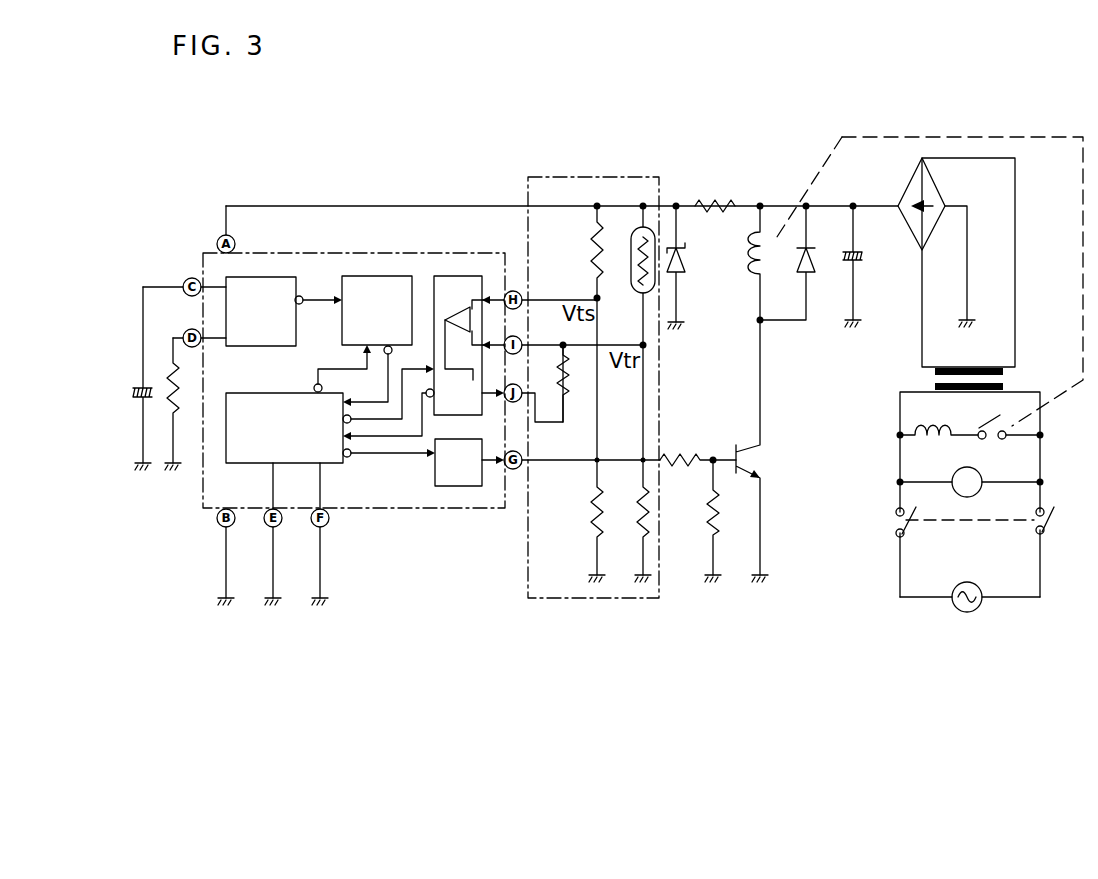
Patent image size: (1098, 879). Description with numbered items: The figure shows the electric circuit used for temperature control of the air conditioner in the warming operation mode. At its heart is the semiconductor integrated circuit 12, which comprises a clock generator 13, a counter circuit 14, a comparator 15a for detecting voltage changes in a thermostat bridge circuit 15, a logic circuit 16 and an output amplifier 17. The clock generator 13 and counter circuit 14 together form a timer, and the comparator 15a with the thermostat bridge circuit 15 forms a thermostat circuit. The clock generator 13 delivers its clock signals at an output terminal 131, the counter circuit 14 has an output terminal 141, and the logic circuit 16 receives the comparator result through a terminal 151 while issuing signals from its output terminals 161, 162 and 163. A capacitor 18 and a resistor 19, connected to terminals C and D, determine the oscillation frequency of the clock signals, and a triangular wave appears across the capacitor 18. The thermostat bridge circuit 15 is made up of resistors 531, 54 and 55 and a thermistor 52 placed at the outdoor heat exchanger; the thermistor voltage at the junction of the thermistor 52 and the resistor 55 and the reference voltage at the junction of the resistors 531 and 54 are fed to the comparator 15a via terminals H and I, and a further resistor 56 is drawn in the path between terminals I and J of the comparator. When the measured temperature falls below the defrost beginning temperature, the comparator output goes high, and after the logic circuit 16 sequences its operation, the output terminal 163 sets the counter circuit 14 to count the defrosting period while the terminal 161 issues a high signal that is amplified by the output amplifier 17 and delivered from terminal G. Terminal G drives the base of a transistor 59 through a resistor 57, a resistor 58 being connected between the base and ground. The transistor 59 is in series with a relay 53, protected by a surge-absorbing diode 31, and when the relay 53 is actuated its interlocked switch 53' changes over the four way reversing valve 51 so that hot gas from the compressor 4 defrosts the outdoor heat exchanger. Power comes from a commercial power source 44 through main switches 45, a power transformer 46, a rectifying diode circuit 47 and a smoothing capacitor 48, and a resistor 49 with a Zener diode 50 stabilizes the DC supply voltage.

The semiconductor integrated circuit 12 is at (400, 254).
The clock generator 13 is at (261, 311).
The output terminal of the clock generator 131 is at (295, 300).
The counter circuit 14 is at (377, 310).
The output terminal of the counter circuit 141 is at (388, 346).
The thermostat bridge circuit 15 is at (578, 177).
The comparator 15a is at (469, 345).
The output terminal of the comparator 151 is at (423, 413).
The logic circuit 16 is at (284, 428).
The output terminal of the logic circuit 161 is at (343, 453).
The output terminal of the logic circuit 162 is at (343, 420).
The output terminal of the logic circuit 163 is at (334, 381).
The output amplifier 17 is at (469, 462).
The capacitor 18 is at (133, 393).
The resistor 19 is at (173, 380).
The diode 31 is at (801, 270).
The compressor 4 is at (983, 470).
The commercial power source 44 is at (968, 613).
The main switches 45 is at (910, 528).
The power transformer 46 is at (1015, 377).
The rectifying diode circuit 47 is at (938, 187).
The smoothing capacitor 48 is at (865, 262).
The resistor 49 is at (718, 199).
The Zener diode 50 is at (687, 263).
The four way reversing valve 51 is at (918, 430).
The thermistor 52 is at (628, 283).
The relay 53 is at (743, 267).
The switch 53' is at (1009, 421).
The resistor 531 is at (590, 264).
The resistor 54 is at (593, 503).
The resistor 55 is at (648, 513).
The resistor 56 is at (561, 382).
The resistor 57 is at (675, 452).
The resistor 58 is at (720, 520).
The transistor 59 is at (757, 463).